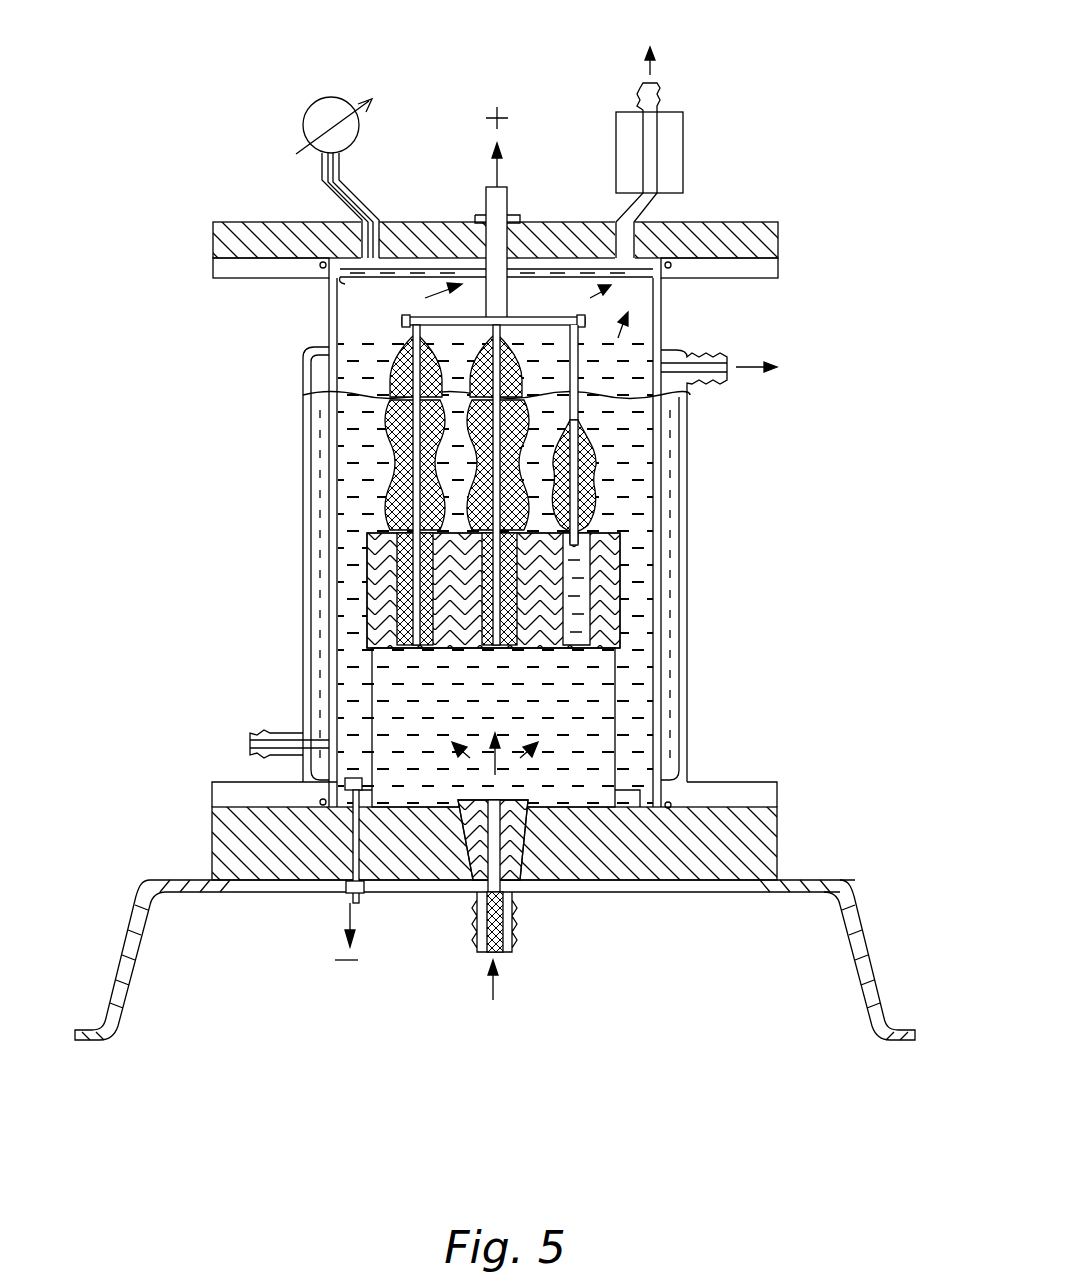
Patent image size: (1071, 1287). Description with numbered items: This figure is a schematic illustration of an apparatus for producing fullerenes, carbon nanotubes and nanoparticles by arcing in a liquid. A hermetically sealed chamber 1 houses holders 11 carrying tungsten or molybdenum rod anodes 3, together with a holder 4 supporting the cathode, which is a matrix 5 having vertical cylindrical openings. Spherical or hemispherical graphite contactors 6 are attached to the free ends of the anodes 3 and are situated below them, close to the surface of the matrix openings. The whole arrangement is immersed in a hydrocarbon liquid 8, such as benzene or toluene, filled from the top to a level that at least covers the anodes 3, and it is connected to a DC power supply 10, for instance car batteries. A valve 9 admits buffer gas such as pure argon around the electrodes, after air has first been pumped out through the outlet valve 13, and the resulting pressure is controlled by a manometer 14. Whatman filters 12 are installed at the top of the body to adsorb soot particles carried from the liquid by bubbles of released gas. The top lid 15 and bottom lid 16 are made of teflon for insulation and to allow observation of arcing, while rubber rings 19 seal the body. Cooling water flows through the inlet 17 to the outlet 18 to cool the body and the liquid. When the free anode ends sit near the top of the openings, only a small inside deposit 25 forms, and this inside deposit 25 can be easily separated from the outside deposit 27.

The hermetically sealed chamber 1 is at (689, 717).
The anode 3 is at (578, 452).
The cathode holder 4 is at (610, 628).
The cathode matrix 5 is at (600, 573).
The graphite contactor 6 is at (598, 522).
The hydrocarbon liquid 8 is at (647, 425).
The valve 9 is at (508, 938).
The DC power supply 10 is at (507, 185).
The anode holder 11 is at (402, 320).
The Whatman filter 12 is at (645, 274).
The outlet valve 13 is at (660, 97).
The manometer 14 is at (309, 107).
The top lid 15 is at (213, 228).
The bottom lid 16 is at (212, 830).
The cooling water inlet 17 is at (258, 730).
The cooling water outlet 18 is at (727, 378).
The rubber ring 19 is at (322, 262).
The inside deposit 25 is at (392, 535).
The outside deposit 27 is at (390, 432).